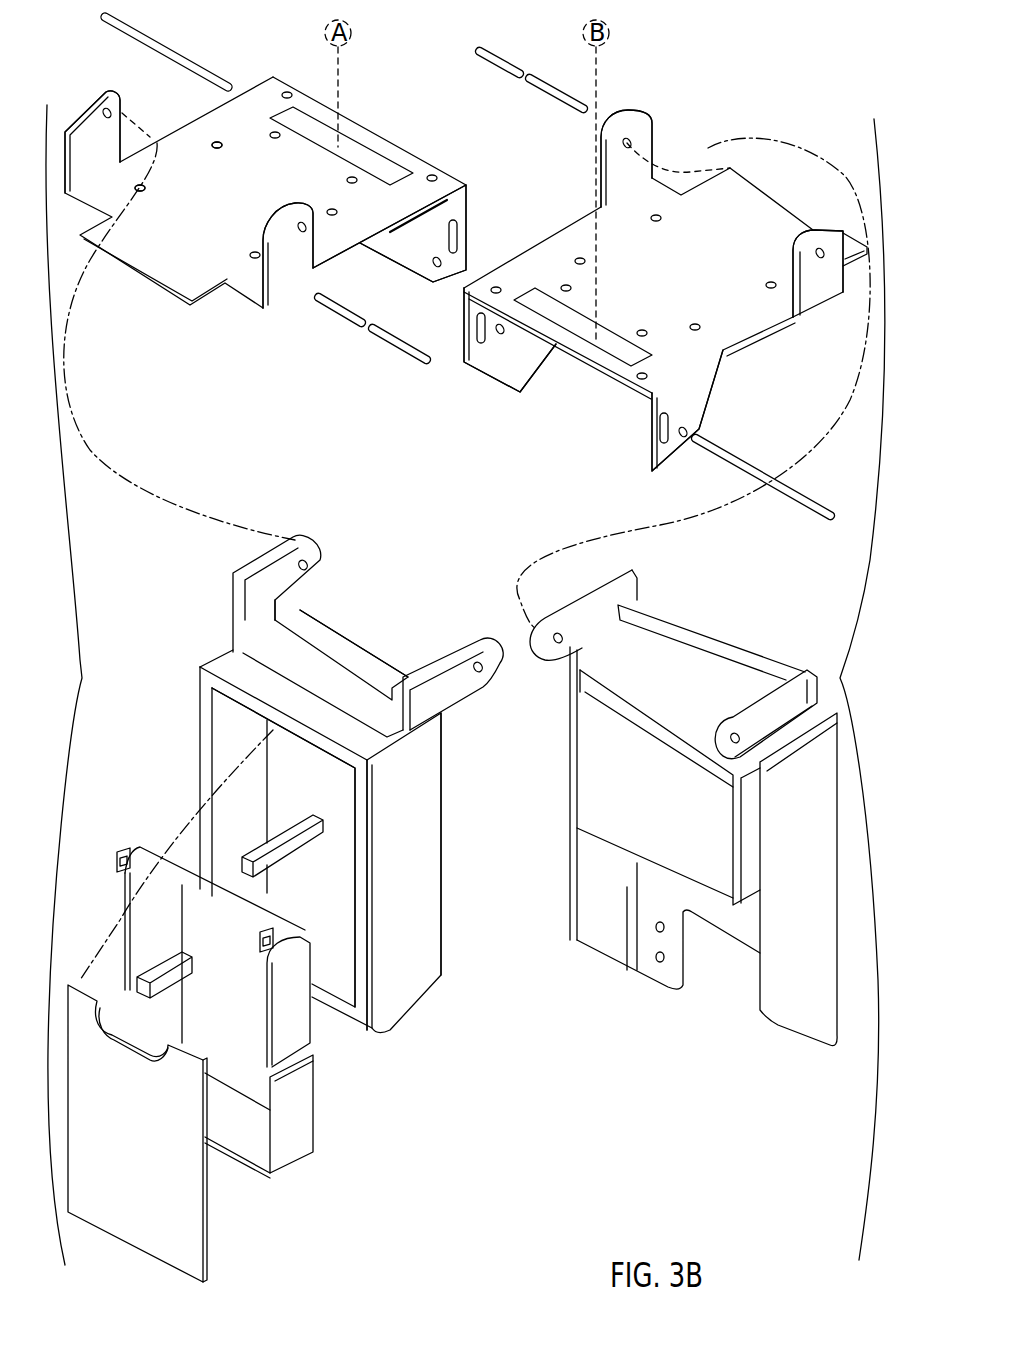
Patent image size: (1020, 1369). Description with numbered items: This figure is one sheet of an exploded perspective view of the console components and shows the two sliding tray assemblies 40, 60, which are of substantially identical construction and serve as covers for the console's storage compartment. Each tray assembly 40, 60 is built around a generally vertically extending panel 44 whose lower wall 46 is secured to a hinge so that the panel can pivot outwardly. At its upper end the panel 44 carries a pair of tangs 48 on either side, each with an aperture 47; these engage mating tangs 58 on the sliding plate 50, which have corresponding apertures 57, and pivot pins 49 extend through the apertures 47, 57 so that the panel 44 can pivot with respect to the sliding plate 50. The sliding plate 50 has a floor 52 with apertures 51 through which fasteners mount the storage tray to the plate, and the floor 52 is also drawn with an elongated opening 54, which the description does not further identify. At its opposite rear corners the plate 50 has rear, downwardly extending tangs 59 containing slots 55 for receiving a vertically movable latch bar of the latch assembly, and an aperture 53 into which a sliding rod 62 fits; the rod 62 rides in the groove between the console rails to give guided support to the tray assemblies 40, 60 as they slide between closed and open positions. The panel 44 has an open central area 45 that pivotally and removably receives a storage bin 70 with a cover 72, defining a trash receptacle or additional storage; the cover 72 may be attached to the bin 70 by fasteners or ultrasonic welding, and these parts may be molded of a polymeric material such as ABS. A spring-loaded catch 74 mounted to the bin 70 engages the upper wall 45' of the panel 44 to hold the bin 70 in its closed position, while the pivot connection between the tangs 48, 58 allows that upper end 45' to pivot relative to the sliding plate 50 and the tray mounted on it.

The tray assembly 40 is at (57, 672).
The panel 44 is at (190, 712).
The open central area 45 is at (245, 847).
The upper wall 45' is at (495, 635).
The lower wall 46 is at (337, 970).
The apertures 47 is at (310, 569).
The tangs 48 is at (300, 534).
The pivot pins 49 is at (342, 313).
The sliding plate 50 is at (258, 70).
The apertures 51 is at (217, 150).
The floor 52 is at (176, 252).
The aperture 53 is at (437, 267).
The slot 54 is at (353, 153).
The slots 55 is at (460, 233).
The apertures 57 is at (113, 110).
The tangs 58 is at (101, 91).
The tangs 59 is at (470, 198).
The tray assembly 60 is at (868, 672).
The sliding rod 62 is at (145, 32).
The storage bin 70 is at (312, 1172).
The cover 72 is at (132, 1228).
The spring-loaded catch 74 is at (323, 827).